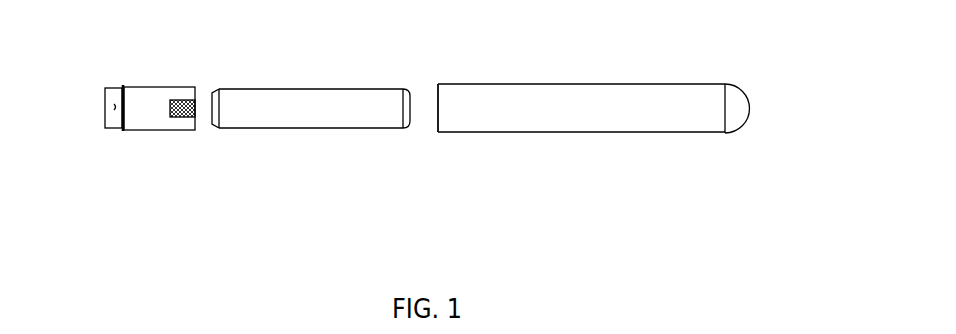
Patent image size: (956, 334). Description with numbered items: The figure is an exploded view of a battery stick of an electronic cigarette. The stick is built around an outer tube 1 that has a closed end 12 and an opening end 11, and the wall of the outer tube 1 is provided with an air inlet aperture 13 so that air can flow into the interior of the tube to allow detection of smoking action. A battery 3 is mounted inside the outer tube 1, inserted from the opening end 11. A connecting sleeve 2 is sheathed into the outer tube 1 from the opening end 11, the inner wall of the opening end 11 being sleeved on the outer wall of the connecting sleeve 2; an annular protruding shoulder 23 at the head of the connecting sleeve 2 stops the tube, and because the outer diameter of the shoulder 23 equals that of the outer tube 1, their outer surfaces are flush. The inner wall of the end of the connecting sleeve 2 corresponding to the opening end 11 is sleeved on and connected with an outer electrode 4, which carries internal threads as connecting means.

The outer tube 1 is at (598, 78).
The opening end 11 is at (455, 105).
The closed end 12 is at (740, 106).
The air inlet aperture 13 is at (722, 108).
The connecting sleeve 2 is at (142, 105).
The annular protruding shoulder 23 is at (121, 133).
The battery 3 is at (298, 108).
The outer electrode 4 is at (108, 87).